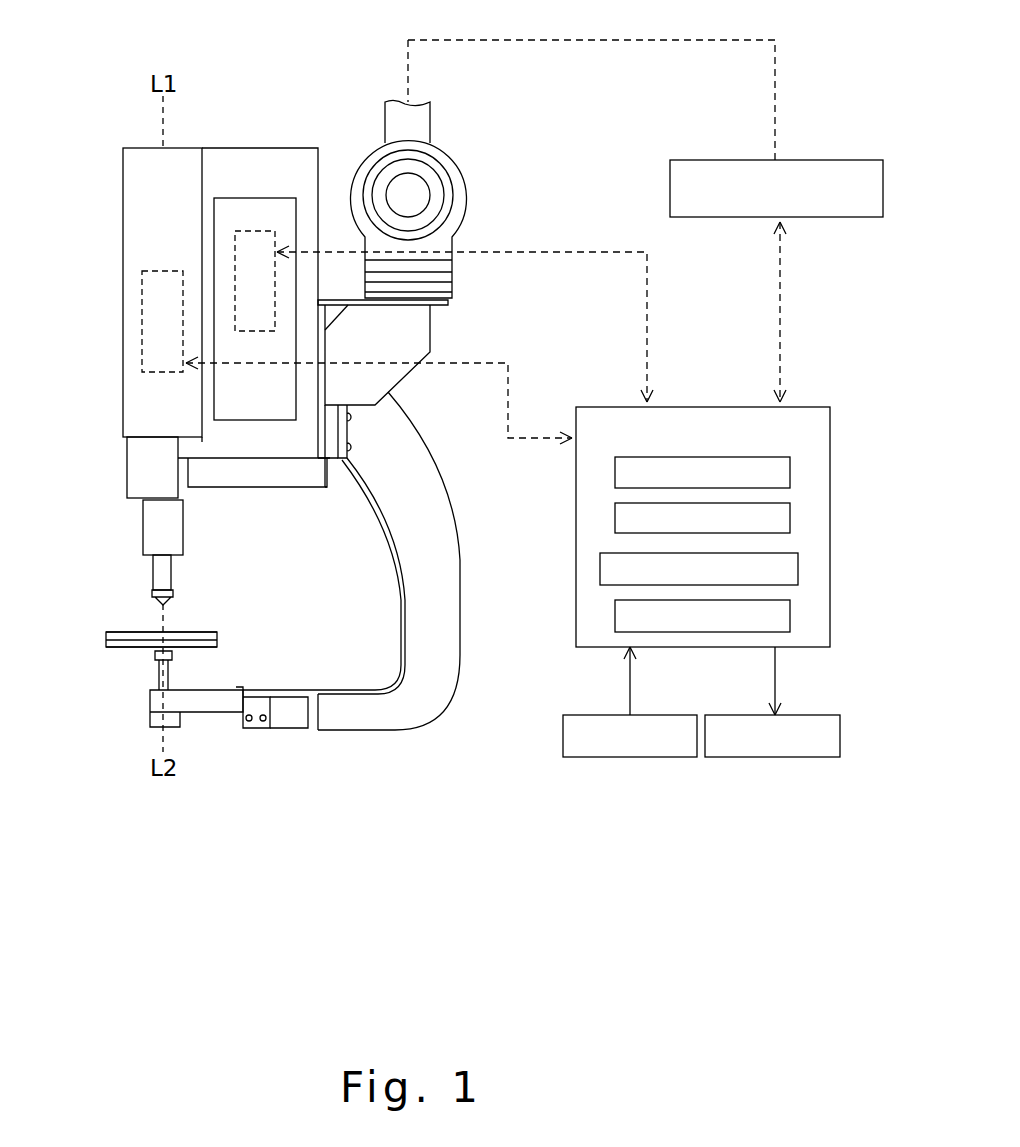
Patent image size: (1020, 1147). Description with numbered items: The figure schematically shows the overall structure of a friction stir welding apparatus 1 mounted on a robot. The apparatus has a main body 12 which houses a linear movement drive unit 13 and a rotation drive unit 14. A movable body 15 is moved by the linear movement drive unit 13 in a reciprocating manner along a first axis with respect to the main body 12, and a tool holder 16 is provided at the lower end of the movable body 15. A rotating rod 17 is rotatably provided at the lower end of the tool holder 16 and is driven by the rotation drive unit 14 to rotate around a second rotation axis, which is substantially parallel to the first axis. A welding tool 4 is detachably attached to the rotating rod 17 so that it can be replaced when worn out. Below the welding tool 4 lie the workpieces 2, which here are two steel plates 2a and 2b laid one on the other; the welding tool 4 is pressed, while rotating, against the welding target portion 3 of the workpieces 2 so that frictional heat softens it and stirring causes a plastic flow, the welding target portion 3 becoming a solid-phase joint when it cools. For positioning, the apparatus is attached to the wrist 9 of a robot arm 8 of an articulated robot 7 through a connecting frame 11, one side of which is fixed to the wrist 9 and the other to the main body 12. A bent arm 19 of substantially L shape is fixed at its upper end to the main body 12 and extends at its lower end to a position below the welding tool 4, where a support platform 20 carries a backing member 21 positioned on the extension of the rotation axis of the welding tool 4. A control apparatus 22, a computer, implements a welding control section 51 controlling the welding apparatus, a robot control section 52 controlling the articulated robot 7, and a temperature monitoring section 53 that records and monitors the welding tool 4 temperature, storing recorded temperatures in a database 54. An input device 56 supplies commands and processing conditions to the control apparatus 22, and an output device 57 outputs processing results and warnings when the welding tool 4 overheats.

The friction stir welding apparatus 1 is at (68, 93).
The workpieces 2 is at (46, 620).
The steel plate 2a is at (106, 632).
The steel plate 2b is at (118, 647).
The welding target portion 3 is at (176, 625).
The welding tool 4 is at (169, 600).
The articulated robot 7 is at (833, 160).
The robot arm 8 is at (430, 124).
The wrist 9 is at (452, 240).
The connecting frame 11 is at (430, 335).
The main body 12 is at (248, 148).
The linear movement drive unit 13 is at (258, 230).
The rotation drive unit 14 is at (142, 298).
The movable body 15 is at (127, 465).
The tool holder 16 is at (183, 520).
The rotating rod 17 is at (166, 567).
The bent arm 19 is at (462, 560).
The support platform 20 is at (200, 712).
The backing member 21 is at (158, 675).
The control apparatus 22 is at (803, 407).
The welding control section 51 is at (790, 477).
The robot control section 52 is at (790, 523).
The temperature monitoring section 53 is at (798, 570).
The database 54 is at (790, 617).
The input device 56 is at (617, 757).
The output device 57 is at (767, 757).